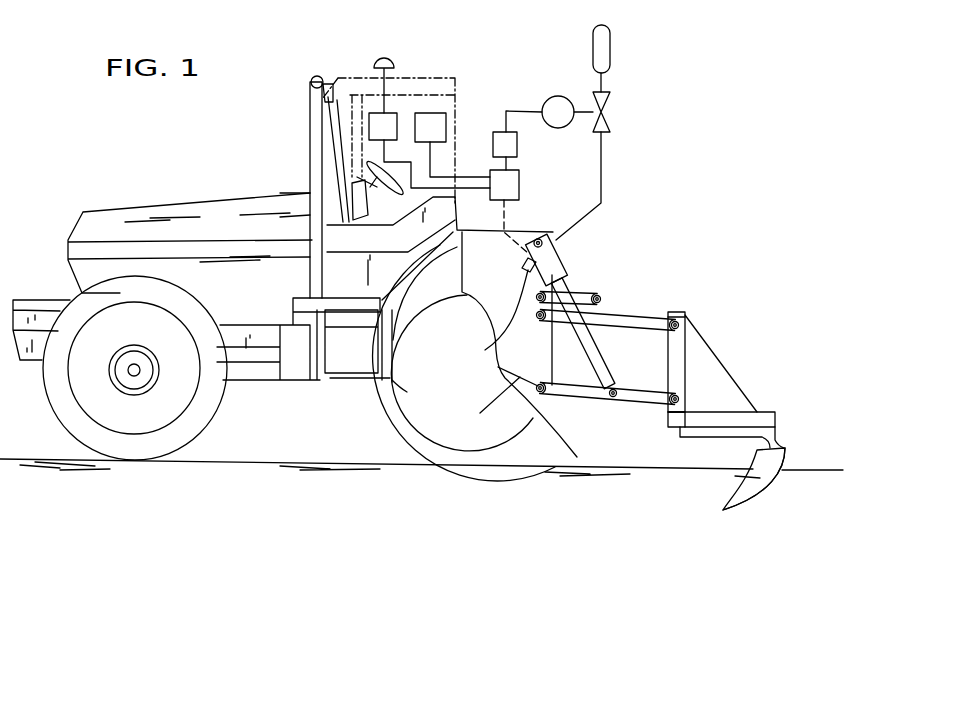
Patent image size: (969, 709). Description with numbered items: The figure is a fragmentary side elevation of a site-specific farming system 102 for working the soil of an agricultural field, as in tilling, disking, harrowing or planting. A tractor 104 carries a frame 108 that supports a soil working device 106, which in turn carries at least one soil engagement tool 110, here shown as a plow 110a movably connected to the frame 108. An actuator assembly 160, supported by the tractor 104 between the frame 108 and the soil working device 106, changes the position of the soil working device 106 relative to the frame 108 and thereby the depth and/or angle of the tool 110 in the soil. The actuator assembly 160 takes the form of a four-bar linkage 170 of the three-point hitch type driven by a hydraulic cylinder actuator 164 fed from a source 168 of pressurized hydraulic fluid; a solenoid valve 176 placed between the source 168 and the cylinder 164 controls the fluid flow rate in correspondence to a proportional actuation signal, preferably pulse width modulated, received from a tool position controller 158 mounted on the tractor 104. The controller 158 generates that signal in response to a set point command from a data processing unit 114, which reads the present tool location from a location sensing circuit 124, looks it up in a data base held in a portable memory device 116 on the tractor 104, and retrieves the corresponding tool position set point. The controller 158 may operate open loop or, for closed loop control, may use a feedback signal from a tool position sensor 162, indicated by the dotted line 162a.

The system 102 is at (747, 138).
The tractor 104 is at (150, 203).
The soil working device 106 is at (775, 392).
The frame 108 is at (435, 428).
The soil engagement tool 110 is at (765, 505).
The plow 110a is at (773, 487).
The data processing unit 114 is at (519, 187).
The portable memory device 116 is at (433, 113).
The location sensing circuit 124 is at (369, 120).
The tool position controller 158 is at (517, 143).
The actuator assembly 160 is at (670, 288).
The tool position sensor 162 is at (513, 344).
The dotted line 162a is at (518, 248).
The hydraulic cylinder actuator 164 is at (563, 248).
The source of pressurized hydraulic fluid 168 is at (610, 50).
The four-bar linkage 170 is at (637, 410).
The solenoid valve 176 is at (605, 112).